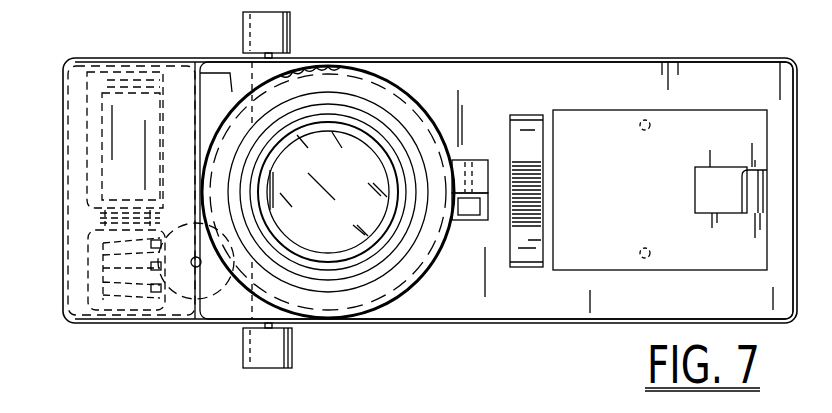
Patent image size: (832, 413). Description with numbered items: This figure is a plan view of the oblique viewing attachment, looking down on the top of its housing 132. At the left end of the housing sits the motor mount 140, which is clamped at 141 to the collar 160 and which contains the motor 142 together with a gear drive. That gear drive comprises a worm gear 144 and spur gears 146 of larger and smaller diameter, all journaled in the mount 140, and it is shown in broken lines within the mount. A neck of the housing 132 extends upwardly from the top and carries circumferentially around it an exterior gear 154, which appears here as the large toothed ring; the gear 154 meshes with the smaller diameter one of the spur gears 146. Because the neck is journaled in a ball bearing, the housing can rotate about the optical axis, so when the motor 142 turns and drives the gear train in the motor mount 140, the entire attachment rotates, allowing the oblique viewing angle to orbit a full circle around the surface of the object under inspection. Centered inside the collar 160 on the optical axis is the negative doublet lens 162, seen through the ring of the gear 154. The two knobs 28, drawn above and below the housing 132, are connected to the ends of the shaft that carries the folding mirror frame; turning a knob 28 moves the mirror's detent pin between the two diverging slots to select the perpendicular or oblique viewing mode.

The knobs 28 is at (290, 27).
The housing 132 is at (593, 59).
The motor mount 140 is at (62, 92).
The clamp 141 is at (470, 158).
The motor 142 is at (62, 165).
The worm gear 144 is at (132, 308).
The spur gears 146 is at (190, 318).
The exterior gear 154 is at (333, 70).
The collar 160 is at (382, 157).
The negative doublet lens 162 is at (342, 237).